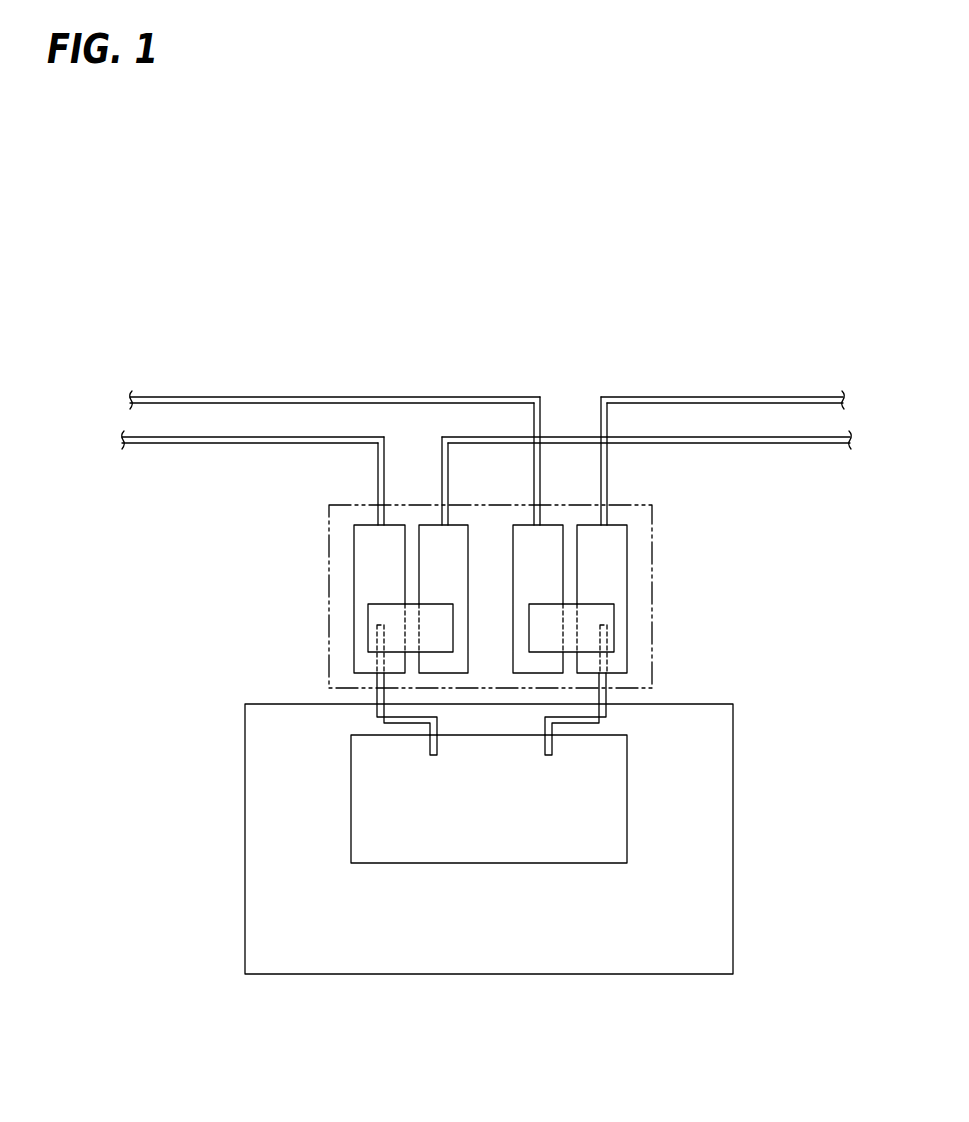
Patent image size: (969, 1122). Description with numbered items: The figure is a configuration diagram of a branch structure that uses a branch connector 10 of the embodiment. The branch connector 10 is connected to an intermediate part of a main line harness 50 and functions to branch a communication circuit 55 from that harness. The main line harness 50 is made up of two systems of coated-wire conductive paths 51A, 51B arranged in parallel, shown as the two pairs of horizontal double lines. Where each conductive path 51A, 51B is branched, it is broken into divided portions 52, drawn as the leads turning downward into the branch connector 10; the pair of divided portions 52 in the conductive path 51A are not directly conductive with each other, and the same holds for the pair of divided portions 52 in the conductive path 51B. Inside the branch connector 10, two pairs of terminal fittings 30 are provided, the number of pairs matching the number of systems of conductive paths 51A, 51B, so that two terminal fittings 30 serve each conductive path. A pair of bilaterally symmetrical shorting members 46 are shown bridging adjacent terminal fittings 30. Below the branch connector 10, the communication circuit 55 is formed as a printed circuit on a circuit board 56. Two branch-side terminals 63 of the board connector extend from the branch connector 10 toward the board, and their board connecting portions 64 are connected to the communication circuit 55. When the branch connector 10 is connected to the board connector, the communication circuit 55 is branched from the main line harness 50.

The branch connector 10 is at (652, 527).
The main line harness 50 is at (633, 301).
The conductive path 51A is at (350, 437).
The conductive path 51B is at (515, 397).
The divided portion 52 is at (442, 487).
The terminal fitting 30 is at (433, 572).
The shorting member 46 is at (380, 613).
The branch-side terminal 63 is at (377, 717).
The board connecting portion 64 is at (427, 750).
The communication circuit 55 is at (608, 792).
The circuit board 56 is at (705, 860).